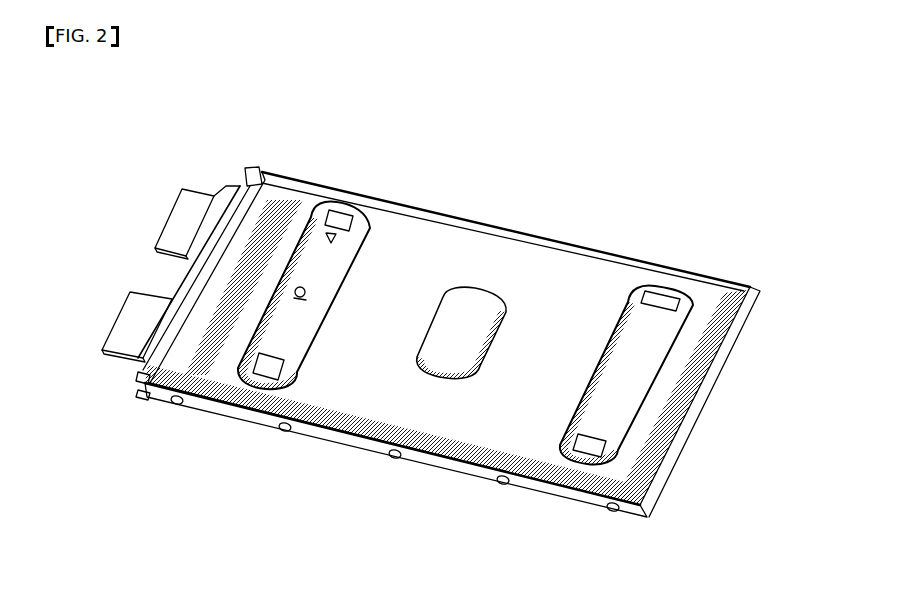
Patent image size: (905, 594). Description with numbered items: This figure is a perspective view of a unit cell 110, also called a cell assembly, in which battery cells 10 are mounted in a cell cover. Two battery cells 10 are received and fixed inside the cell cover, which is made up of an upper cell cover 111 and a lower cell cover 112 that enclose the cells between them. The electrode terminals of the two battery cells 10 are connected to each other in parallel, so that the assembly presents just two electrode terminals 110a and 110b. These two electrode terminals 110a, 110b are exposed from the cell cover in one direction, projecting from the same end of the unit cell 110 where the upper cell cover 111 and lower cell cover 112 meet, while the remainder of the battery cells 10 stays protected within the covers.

The unit cell 110 is at (131, 135).
The electrode terminal 110a is at (128, 318).
The electrode terminal 110b is at (180, 220).
The upper cell cover 111 is at (350, 398).
The lower cell cover 112 is at (367, 472).
The battery cell 10 is at (130, 375).